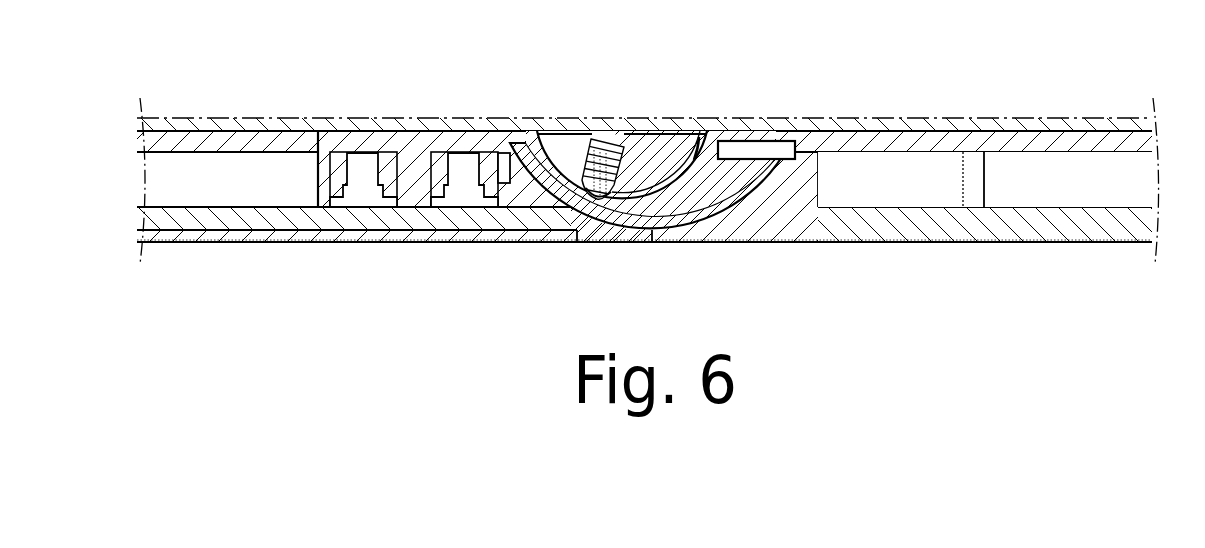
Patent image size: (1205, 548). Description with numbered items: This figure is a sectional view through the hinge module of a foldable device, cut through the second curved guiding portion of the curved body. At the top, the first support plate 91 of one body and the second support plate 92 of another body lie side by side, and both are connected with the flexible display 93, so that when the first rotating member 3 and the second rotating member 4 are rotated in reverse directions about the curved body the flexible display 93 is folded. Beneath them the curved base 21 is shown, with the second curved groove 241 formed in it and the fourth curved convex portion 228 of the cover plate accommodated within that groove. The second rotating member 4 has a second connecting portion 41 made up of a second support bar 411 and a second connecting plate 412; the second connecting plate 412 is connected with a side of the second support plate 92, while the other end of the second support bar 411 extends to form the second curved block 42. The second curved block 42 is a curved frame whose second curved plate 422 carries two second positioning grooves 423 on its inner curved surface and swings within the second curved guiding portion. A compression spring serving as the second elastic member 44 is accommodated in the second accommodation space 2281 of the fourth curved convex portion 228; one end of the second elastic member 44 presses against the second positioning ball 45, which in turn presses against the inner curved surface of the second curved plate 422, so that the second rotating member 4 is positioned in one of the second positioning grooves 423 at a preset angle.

The first rotating member 3 is at (915, 187).
The second rotating member 4 is at (354, 147).
The curved base 21 is at (745, 185).
The second connecting portion 41 is at (414, 103).
The second curved block 42 is at (540, 197).
The second elastic member 44 is at (601, 148).
The second positioning ball 45 is at (603, 202).
The first support plate 91 is at (1045, 140).
The second support plate 92 is at (248, 133).
The flexible display 93 is at (942, 118).
The fourth curved convex portion 228 is at (683, 145).
The second curved groove 241 is at (707, 195).
The second support bar 411 is at (459, 132).
The second connecting plate 412 is at (407, 157).
The second curved plate 422 is at (620, 213).
The second positioning groove 423 is at (577, 212).
The second accommodation space 2281 is at (615, 140).